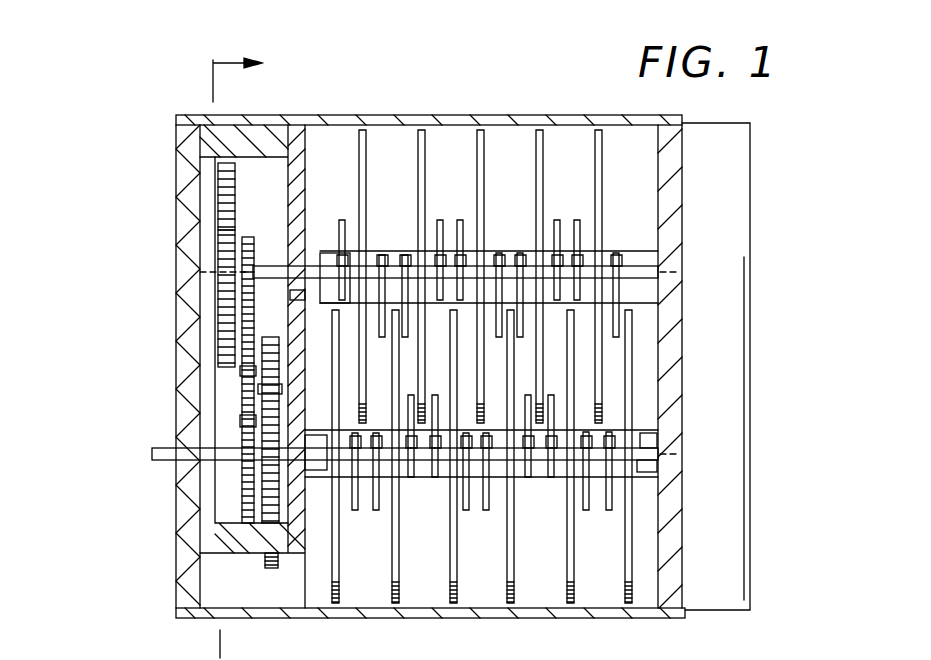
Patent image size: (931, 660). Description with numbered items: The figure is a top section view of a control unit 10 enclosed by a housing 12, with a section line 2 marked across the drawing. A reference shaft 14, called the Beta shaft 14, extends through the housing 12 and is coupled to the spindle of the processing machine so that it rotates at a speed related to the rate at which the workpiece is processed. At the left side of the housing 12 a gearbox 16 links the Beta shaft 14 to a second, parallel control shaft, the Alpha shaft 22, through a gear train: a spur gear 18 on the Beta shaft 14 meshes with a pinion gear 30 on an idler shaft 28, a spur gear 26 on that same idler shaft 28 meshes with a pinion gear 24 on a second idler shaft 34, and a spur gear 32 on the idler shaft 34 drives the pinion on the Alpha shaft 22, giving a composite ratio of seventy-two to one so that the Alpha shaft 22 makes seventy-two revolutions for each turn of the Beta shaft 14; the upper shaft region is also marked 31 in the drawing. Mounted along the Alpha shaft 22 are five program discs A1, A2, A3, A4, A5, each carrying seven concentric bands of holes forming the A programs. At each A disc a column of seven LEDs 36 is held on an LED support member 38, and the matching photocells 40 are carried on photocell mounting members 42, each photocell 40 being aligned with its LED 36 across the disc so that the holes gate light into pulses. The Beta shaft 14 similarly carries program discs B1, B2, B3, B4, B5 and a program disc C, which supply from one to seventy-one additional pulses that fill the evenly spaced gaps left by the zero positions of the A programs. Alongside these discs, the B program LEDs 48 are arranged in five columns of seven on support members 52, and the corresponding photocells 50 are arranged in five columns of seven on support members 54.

The section line 2- 2 is at (221, 355).
The control unit 10 is at (168, 234).
The housing 12 is at (452, 113).
The reference shaft 14 is at (152, 456).
The gearbox 16 is at (256, 142).
The spur gear 18 is at (268, 490).
The Alpha shaft 22 is at (321, 268).
The pinion gear 24 is at (248, 250).
The spur gear 26 is at (262, 420).
The idler shaft 28 is at (262, 390).
The pinion gear 30 is at (258, 370).
The upper shaft 31 is at (250, 272).
The spur gear 32 is at (232, 180).
The idler shaft 34 is at (232, 228).
The LEDs 36 is at (352, 232).
The LED support members 38 is at (290, 296).
The photocells 40 is at (380, 256).
The photocell mounting members 42 is at (404, 258).
The LEDs 48 is at (352, 470).
The photocells 50 is at (318, 472).
The support members 52 is at (377, 472).
The support members 54 is at (280, 500).
The program disc A1 is at (366, 137).
The program disc A2 is at (425, 137).
The program disc A3 is at (484, 137).
The program disc A4 is at (543, 137).
The program disc A5 is at (602, 137).
The program disc B1 is at (331, 594).
The program disc B2 is at (391, 594).
The program disc B3 is at (449, 594).
The program disc B4 is at (506, 594).
The program disc B5 is at (566, 594).
The program disc C is at (624, 594).